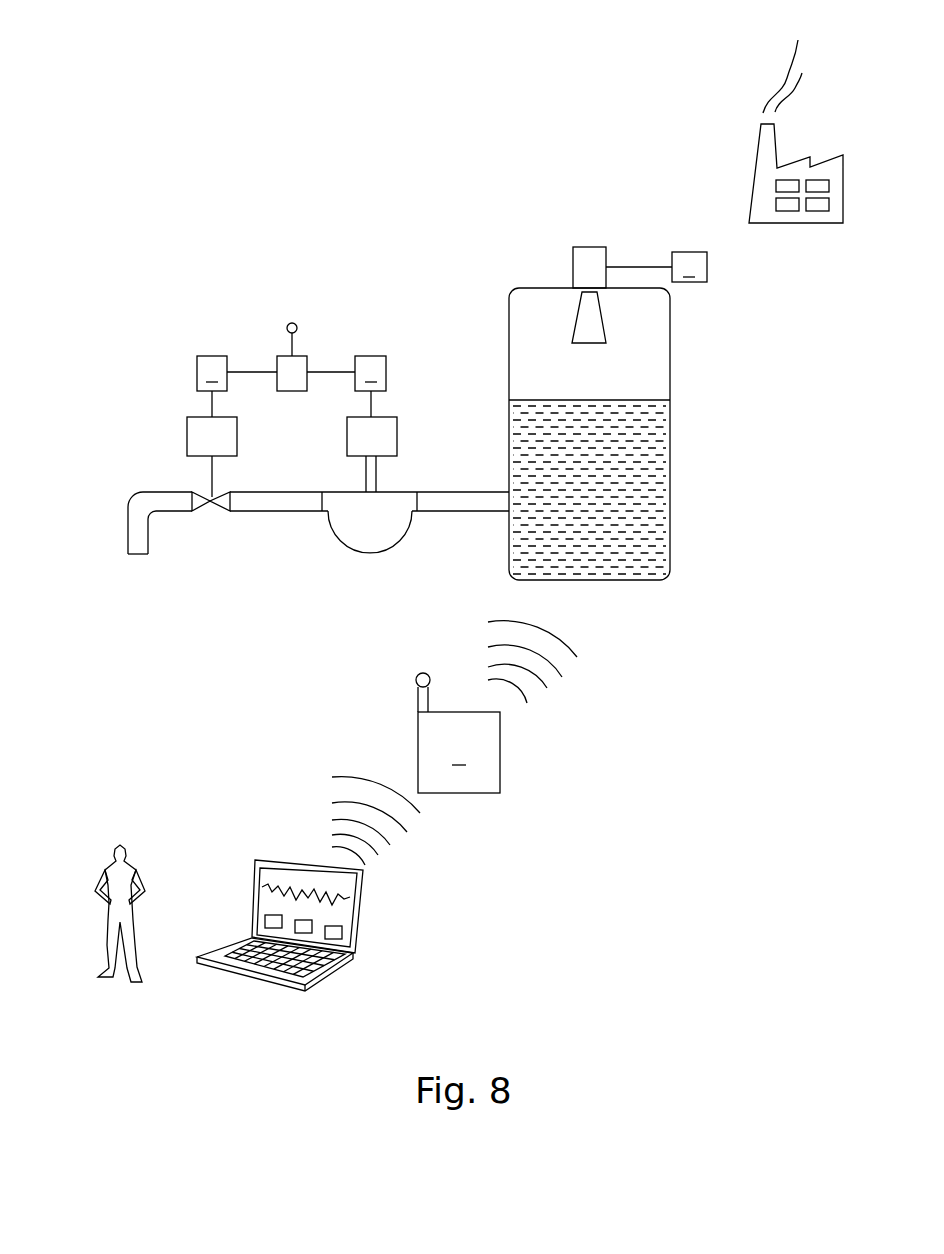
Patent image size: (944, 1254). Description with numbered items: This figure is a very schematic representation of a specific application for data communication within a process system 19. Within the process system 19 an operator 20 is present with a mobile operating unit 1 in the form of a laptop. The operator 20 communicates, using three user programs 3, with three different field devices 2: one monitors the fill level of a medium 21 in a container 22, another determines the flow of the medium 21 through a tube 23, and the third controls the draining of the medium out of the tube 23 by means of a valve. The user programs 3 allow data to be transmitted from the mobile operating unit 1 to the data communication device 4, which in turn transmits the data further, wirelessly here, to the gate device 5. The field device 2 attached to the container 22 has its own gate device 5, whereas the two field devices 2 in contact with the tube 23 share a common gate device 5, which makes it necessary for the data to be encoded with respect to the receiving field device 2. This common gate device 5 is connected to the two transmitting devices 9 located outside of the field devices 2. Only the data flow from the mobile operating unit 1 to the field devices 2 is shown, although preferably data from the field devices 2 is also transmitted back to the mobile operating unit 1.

The mobile operating unit 1 is at (222, 965).
The field device 2 is at (222, 433).
The user program 3 is at (354, 946).
The data communication device 4 is at (454, 743).
The gate device 5 is at (297, 363).
The transmitting device 9 is at (291, 373).
The process system 19 is at (745, 122).
The operator 20 is at (100, 843).
The medium 21 is at (633, 433).
The container 22 is at (670, 505).
The tube 23 is at (453, 513).